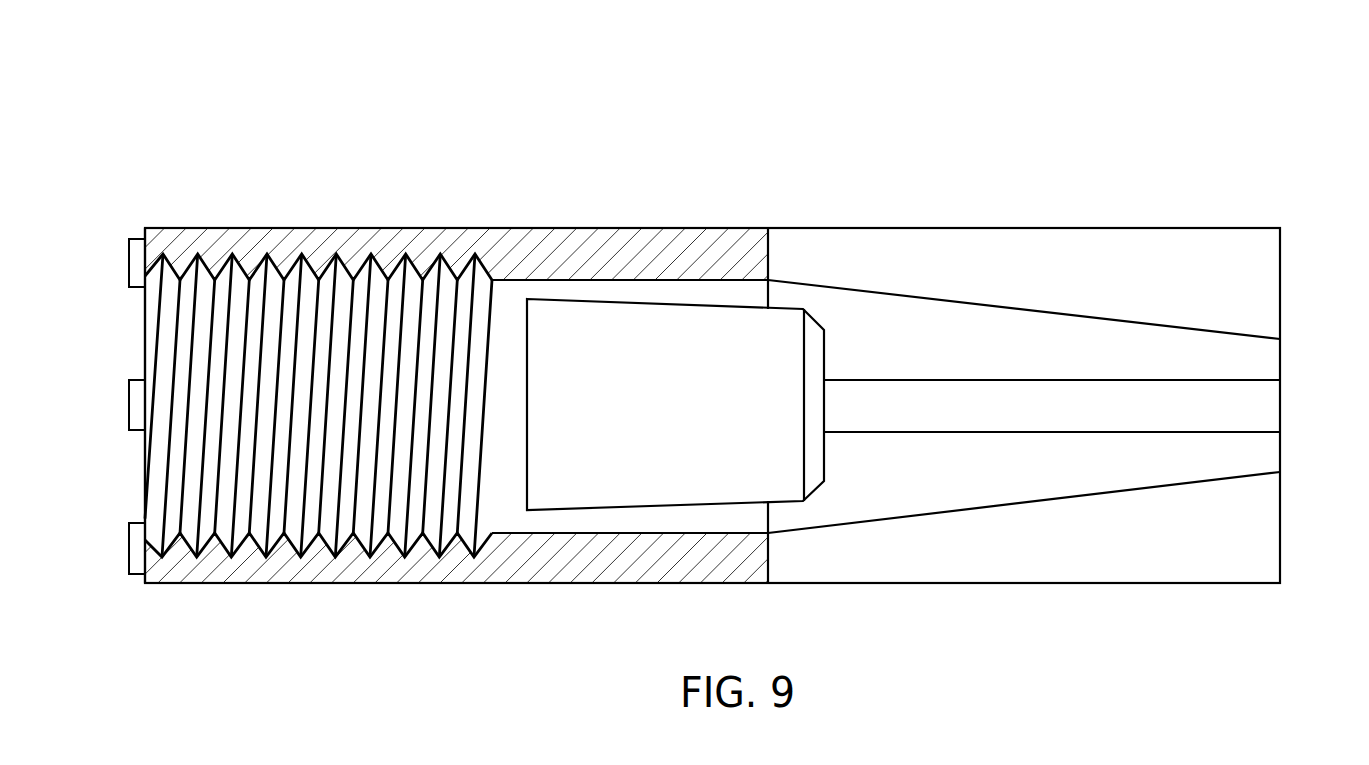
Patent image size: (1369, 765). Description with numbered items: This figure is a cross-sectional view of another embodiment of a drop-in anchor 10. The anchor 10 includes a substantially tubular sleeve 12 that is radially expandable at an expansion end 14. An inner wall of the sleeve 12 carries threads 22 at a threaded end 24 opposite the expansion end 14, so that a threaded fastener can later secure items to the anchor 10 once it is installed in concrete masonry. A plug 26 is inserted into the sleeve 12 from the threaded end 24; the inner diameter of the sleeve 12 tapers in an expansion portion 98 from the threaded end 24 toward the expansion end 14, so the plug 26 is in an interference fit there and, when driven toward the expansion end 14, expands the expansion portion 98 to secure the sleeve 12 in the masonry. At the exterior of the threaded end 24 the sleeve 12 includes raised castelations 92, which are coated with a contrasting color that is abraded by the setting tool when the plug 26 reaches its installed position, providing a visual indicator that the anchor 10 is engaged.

The drop-in anchor 10 is at (278, 128).
The sleeve 12 is at (652, 584).
The expansion end 14 is at (1283, 270).
The threads 22 is at (218, 548).
The threaded end 24 is at (145, 465).
The plug 26 is at (676, 418).
The castelations 92 is at (129, 262).
The expansion portion 98 is at (1122, 235).